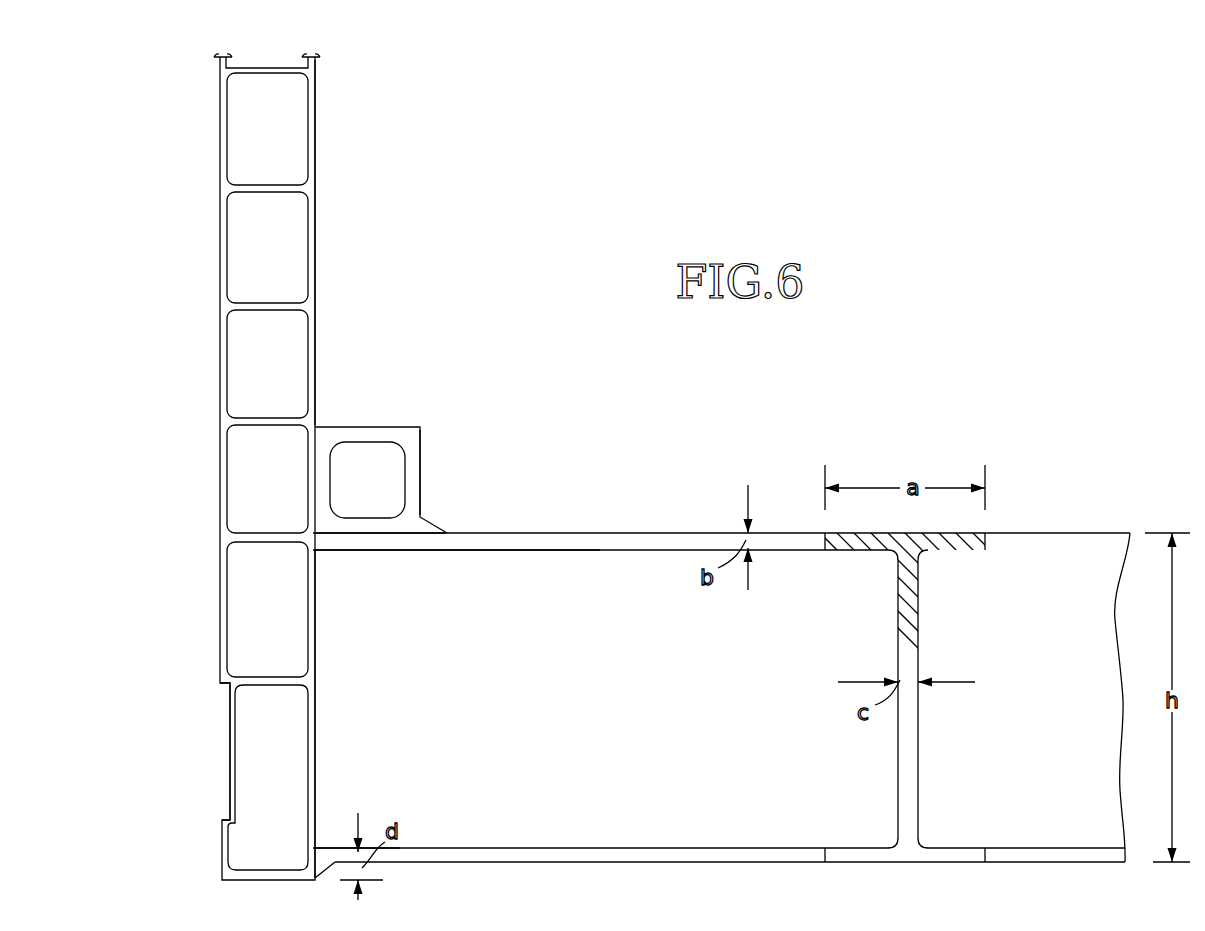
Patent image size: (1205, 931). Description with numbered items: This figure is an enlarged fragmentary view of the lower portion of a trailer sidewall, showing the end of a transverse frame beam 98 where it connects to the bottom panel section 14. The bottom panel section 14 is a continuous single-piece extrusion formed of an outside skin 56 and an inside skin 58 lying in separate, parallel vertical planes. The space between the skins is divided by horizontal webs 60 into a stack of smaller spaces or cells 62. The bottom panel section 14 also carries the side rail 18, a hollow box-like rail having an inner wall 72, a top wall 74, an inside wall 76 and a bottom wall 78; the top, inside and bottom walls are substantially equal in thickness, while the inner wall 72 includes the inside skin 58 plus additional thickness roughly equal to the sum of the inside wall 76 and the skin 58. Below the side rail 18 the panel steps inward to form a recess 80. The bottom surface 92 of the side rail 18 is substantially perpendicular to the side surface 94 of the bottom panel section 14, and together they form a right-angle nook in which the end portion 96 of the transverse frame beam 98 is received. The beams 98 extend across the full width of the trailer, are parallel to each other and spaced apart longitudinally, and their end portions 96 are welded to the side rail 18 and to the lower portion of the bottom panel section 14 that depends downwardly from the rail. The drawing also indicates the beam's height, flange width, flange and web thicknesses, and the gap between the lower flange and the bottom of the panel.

The bottom panel section 14 is at (350, 96).
The side rail 18 is at (410, 402).
The outside skin 56 is at (228, 136).
The inside skin 58 is at (316, 138).
The horizontal web 60 is at (292, 300).
The cell 62 is at (295, 355).
The inner wall 72 is at (317, 480).
The top wall 74 is at (355, 438).
The inside wall 76 is at (418, 478).
The bottom wall 78 is at (365, 527).
The recess 80 is at (230, 740).
The bottom surface 92 is at (394, 537).
The side surface 94 is at (316, 760).
The end portion 96 is at (335, 797).
The transverse frame beam 98 is at (759, 700).